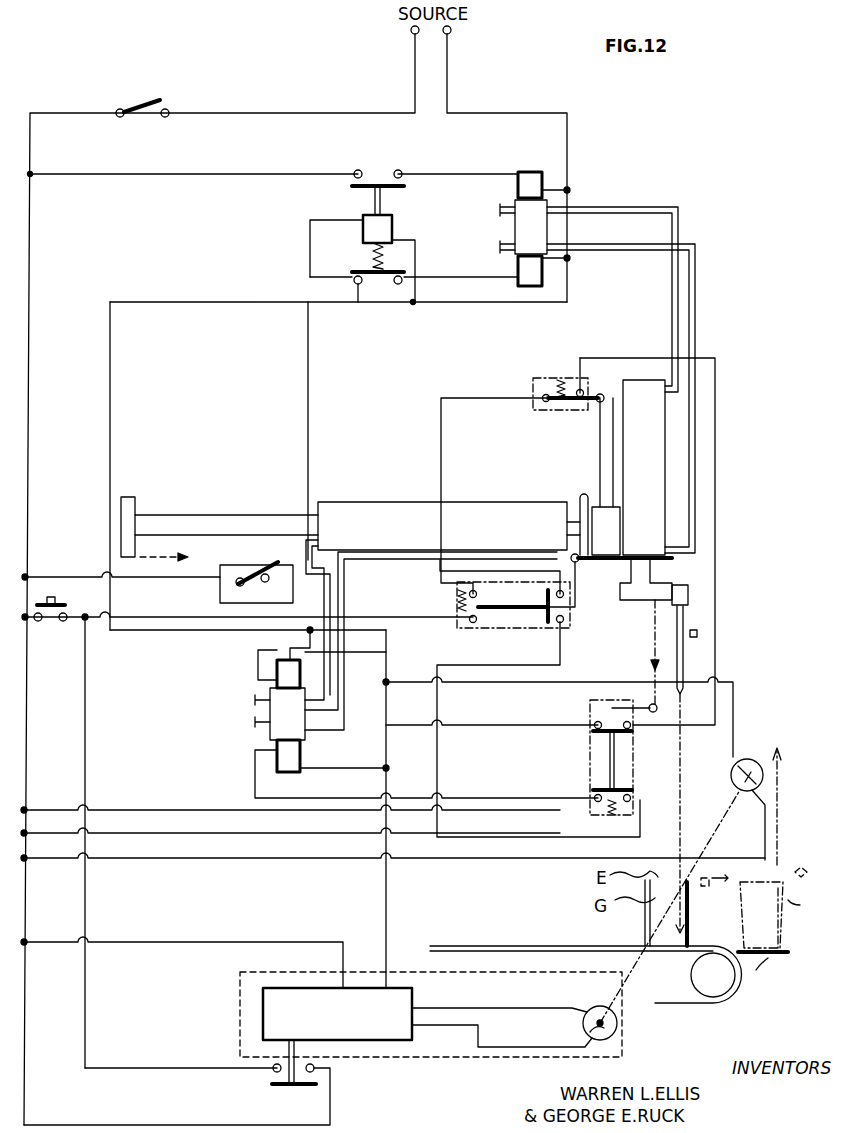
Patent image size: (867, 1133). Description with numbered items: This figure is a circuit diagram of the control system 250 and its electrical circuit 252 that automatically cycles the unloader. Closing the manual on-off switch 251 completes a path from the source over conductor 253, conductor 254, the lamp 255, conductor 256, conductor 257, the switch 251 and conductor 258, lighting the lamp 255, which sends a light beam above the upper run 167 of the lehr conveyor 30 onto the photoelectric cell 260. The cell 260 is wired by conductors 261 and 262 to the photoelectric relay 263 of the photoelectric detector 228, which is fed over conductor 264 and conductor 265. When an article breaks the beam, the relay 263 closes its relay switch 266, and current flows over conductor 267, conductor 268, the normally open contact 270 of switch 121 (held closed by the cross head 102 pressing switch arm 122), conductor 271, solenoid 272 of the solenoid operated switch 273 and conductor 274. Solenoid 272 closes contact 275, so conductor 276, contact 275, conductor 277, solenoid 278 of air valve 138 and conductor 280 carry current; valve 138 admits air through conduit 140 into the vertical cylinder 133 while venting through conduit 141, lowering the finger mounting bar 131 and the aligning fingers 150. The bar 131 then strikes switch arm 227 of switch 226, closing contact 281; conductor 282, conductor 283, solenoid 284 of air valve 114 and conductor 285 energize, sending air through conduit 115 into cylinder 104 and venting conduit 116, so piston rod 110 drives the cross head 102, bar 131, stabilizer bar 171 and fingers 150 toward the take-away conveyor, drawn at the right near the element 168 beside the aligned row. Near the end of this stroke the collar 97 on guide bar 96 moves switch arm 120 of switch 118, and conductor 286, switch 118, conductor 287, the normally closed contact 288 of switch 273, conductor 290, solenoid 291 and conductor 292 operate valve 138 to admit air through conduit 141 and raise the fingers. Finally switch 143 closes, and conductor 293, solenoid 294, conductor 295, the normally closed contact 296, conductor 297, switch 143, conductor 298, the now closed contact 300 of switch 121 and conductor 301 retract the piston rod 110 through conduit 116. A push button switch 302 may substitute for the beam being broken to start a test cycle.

The lehr conveyor 30 is at (678, 1012).
The guide bar 96 is at (238, 516).
The collar 97 is at (130, 504).
The cross head 102 is at (570, 492).
The cylinder 104 is at (442, 526).
The piston rod 110 is at (564, 516).
The solenoid operated air valve 114 is at (282, 701).
The conduit 115 is at (324, 542).
The conduit 116 is at (506, 546).
The switch 118 is at (179, 554).
The switch arm 120 is at (269, 566).
The switch 121 is at (530, 648).
The switch arm 122 is at (578, 570).
The finger mounting bar 131 is at (674, 588).
The vertical cylinder 133 is at (650, 466).
The solenoid operated air valve 138 is at (512, 228).
The conduit 140 is at (644, 208).
The conduit 141 is at (698, 320).
The switch 143 is at (540, 374).
The aligning fingers 150 is at (693, 644).
The upper run 167 is at (545, 926).
The support plate 168 is at (788, 948).
The stabilizer bar 171 is at (698, 632).
The switch 226 is at (588, 750).
The switch arm 227 is at (642, 692).
The photoelectric detector 228 is at (232, 992).
The control system 250 is at (711, 132).
The on-off switch 251 is at (144, 116).
The electrical circuit 252 is at (574, 128).
The conductor 253 is at (447, 80).
The conductor 254 is at (498, 706).
The lamp 255 is at (750, 758).
The conductor 256 is at (220, 862).
The conductor 257 is at (32, 326).
The conductor 258 is at (274, 110).
The photoelectric cell 260 is at (618, 1028).
The conductor 261 is at (496, 1012).
The conductor 262 is at (506, 1048).
The photoelectric relay 263 is at (387, 1042).
The conductor 264 is at (388, 782).
The conductor 265 is at (164, 942).
The relay switch 266 is at (272, 1090).
The conductor 267 is at (88, 970).
The conductor 268 is at (154, 616).
The normally open contact 270 is at (514, 642).
The conductor 271 is at (310, 410).
The solenoid 272 is at (392, 232).
The solenoid operated switch 273 is at (354, 214).
The conductor 274 is at (423, 260).
The normally open contact 275 is at (376, 174).
The conductor 276 is at (212, 172).
The conductor 277 is at (455, 174).
The solenoid 278 is at (528, 168).
The conductor 280 is at (567, 190).
The normally open contact 281 is at (635, 790).
The conductor 282 is at (206, 828).
The conductor 283 is at (504, 800).
The solenoid 284 is at (300, 764).
The conductor 285 is at (310, 774).
The conductor 286 is at (144, 584).
The conductor 287 is at (298, 408).
The normally closed contact 288 is at (375, 300).
The conductor 290 is at (450, 302).
The solenoid 291 is at (560, 278).
The conductor 292 is at (567, 258).
The conductor 293 is at (362, 654).
The solenoid 294 is at (258, 672).
The conductor 295 is at (258, 652).
The normally closed contact 296 is at (630, 736).
The conductor 297 is at (712, 598).
The conductor 298 is at (442, 460).
The normally open contact 300 is at (521, 605).
The conductor 301 is at (438, 712).
The push button switch 302 is at (65, 606).